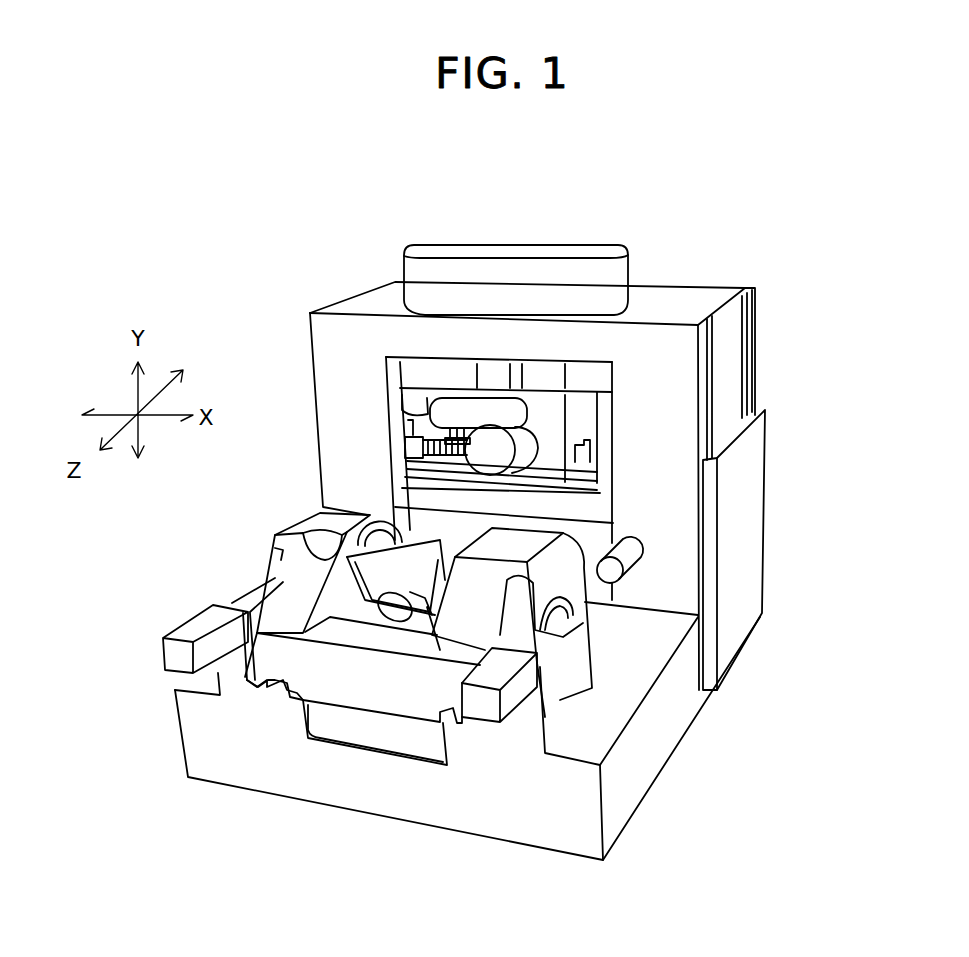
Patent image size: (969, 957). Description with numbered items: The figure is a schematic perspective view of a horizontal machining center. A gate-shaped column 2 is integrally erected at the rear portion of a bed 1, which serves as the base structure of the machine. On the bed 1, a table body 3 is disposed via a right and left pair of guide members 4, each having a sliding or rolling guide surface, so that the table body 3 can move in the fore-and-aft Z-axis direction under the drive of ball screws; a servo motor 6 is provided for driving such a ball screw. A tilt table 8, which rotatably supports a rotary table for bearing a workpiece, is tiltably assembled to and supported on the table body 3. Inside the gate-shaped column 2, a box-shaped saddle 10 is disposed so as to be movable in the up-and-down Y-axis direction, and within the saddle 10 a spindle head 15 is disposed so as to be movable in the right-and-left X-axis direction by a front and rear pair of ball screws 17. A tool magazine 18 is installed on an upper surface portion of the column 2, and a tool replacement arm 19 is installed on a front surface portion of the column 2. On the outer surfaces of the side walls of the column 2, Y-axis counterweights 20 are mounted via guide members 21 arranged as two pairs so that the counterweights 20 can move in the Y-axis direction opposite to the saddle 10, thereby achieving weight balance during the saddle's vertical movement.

The bed 1 is at (467, 797).
The gate-shaped column 2 is at (337, 397).
The table body 3 is at (357, 673).
The guide members 4 is at (260, 690).
The servo motor 6 is at (168, 657).
The tilt table 8 is at (382, 528).
The box-shaped saddle 10 is at (567, 380).
The spindle head 15 is at (553, 447).
The ball screws 17 is at (427, 438).
The tool magazine 18 is at (507, 253).
The tool replacement arm 19 is at (480, 410).
The Y-axis counterweights 20 is at (747, 523).
The guide members 21 is at (715, 337).